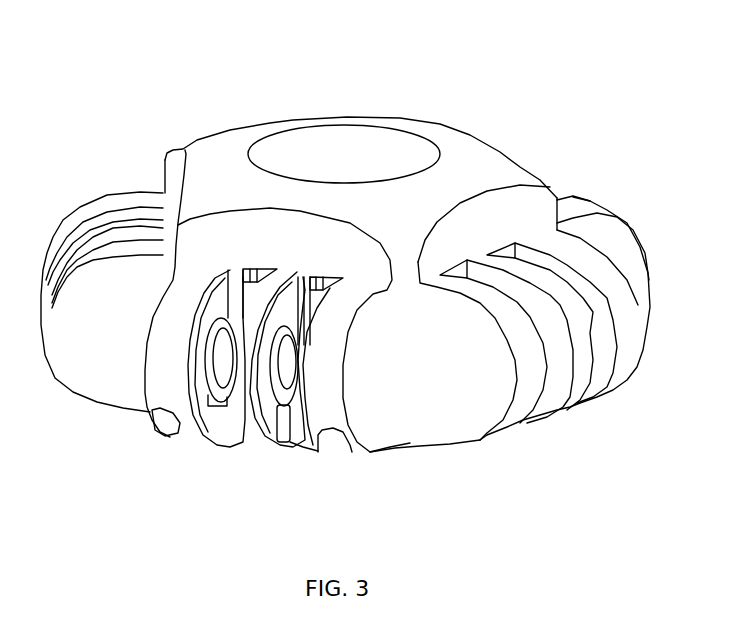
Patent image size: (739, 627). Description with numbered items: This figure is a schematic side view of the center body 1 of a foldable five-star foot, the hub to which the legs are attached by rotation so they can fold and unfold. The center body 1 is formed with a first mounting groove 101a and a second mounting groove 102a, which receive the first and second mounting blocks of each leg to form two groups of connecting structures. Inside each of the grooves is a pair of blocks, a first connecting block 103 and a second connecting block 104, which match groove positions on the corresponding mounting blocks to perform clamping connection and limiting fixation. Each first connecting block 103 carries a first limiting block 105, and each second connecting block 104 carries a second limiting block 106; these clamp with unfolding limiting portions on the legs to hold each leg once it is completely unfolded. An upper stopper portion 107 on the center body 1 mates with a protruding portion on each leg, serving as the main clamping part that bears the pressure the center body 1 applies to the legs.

The center body 1 is at (460, 147).
The first mounting groove 101a is at (230, 273).
The second mounting groove 102a is at (303, 277).
The first connecting block 103 is at (226, 335).
The second connecting block 104 is at (280, 425).
The first limiting block 105 is at (223, 402).
The second limiting block 106 is at (289, 357).
The upper stopper portion 107 is at (312, 238).